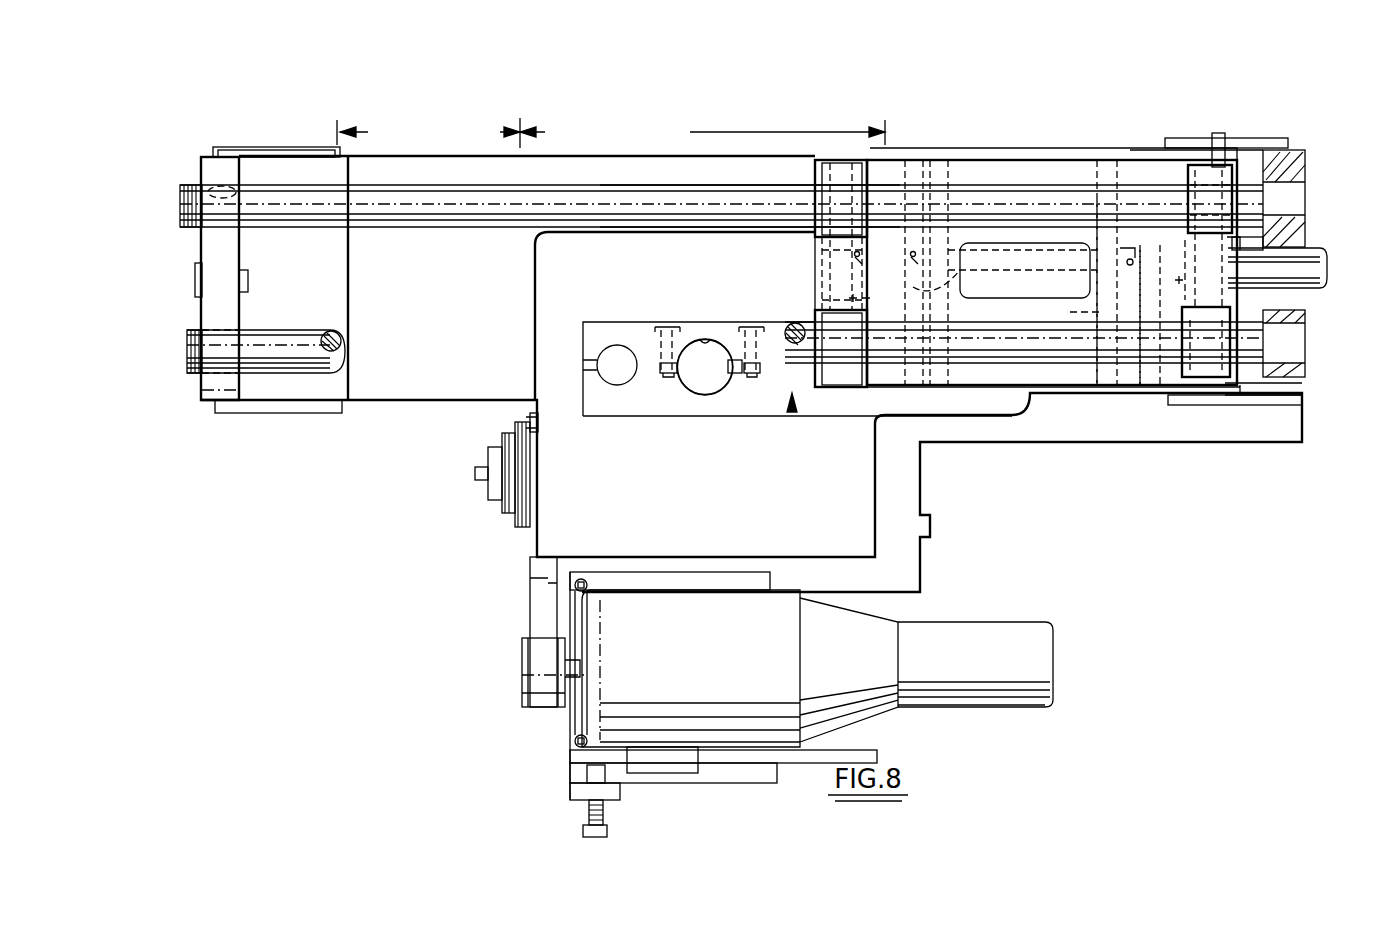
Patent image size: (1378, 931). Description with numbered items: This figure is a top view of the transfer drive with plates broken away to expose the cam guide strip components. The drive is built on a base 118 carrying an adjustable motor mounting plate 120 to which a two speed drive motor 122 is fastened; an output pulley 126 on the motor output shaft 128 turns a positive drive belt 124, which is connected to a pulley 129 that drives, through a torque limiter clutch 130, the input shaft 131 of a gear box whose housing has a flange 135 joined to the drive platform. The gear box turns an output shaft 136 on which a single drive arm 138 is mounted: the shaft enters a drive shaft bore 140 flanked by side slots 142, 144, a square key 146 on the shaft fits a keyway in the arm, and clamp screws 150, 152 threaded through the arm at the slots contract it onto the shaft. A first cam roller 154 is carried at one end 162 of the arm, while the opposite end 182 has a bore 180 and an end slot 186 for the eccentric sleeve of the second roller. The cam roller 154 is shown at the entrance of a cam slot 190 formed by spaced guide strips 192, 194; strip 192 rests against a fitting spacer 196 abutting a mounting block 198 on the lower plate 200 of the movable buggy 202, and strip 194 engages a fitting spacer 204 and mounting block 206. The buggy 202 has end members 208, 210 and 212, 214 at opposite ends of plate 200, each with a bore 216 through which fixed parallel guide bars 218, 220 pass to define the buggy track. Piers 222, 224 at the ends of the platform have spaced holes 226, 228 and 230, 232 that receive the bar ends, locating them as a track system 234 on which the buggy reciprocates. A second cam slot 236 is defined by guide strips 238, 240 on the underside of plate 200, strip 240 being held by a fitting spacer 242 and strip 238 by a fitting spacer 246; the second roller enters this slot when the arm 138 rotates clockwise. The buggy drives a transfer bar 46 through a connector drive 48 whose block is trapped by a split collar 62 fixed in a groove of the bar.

The transfer bar 46 is at (1262, 367).
The connector drive 48 is at (1182, 237).
The split collar 62 is at (1252, 218).
The base 118 is at (762, 770).
The adjustable motor mounting plate 120 is at (877, 738).
The two speed drive motor 122 is at (923, 630).
The positive drive belt 124 is at (533, 612).
The output pulley 126 is at (521, 698).
The output shaft 128 is at (552, 673).
The pulley 129 is at (524, 418).
The torque limiter clutch 130 is at (502, 440).
The input shaft 131 is at (478, 477).
The flange 135 is at (552, 352).
The output shaft 136 is at (702, 375).
The drive arm 138 is at (792, 414).
The drive shaft bore 140 is at (705, 342).
The side slot 142 is at (677, 377).
The side slot 144 is at (750, 375).
The square key 146 is at (735, 375).
The clamp screw 150 is at (673, 322).
The clamp screw 152 is at (747, 320).
The first cam roller 154 is at (890, 387).
The end of drive arm 162 is at (900, 403).
The bore 180 is at (607, 358).
The opposite end of drive arm 182 is at (617, 410).
The end slot 186 is at (585, 365).
The cam slot 190 is at (888, 170).
The guide strip 192 is at (963, 262).
The guide strip 194 is at (862, 262).
The fitting spacer 196 is at (933, 173).
The mounting block 198 is at (963, 217).
The lower plate 200 is at (1033, 375).
The movable buggy 202 is at (1070, 173).
The fitting spacer 204 is at (872, 298).
The mounting block 206 is at (815, 247).
The end member 208 is at (832, 177).
The end member 210 is at (820, 388).
The end member 212 is at (1197, 170).
The end member 214 is at (1218, 370).
The bore 216 is at (1207, 183).
The guide bar 218 is at (433, 213).
The guide bar 220 is at (310, 340).
The pier 222 is at (217, 177).
The pier 224 is at (1287, 290).
The hole 226 is at (215, 370).
The hole 228 is at (206, 192).
The hole 230 is at (1293, 338).
The hole 232 is at (1293, 187).
The track system 234 is at (622, 182).
The cam slot 236 is at (1140, 390).
The guide strip 238 is at (1113, 385).
The guide strip 240 is at (1150, 314).
The fitting spacer 242 is at (1158, 270).
The fitting spacer 246 is at (1064, 312).